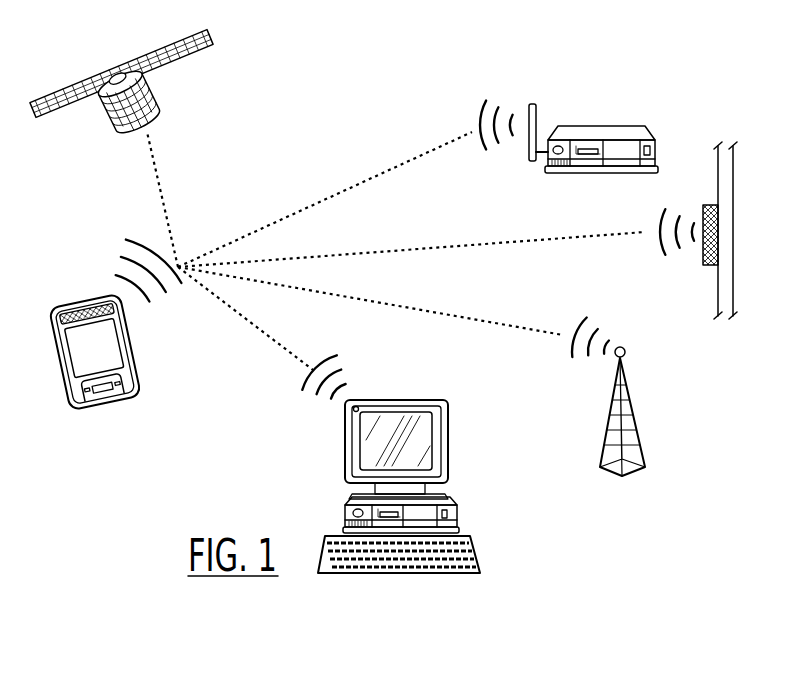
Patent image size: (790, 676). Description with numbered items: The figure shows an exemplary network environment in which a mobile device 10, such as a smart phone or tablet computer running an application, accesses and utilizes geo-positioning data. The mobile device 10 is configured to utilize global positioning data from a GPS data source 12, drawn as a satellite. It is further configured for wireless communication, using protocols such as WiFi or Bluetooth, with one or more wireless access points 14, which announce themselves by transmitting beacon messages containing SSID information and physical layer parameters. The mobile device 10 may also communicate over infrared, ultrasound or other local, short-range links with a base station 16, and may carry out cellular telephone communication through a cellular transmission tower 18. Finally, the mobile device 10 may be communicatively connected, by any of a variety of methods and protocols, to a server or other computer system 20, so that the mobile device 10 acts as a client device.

The mobile device 10 is at (132, 353).
The GPS data source 12 is at (118, 72).
The wireless access point 14 is at (600, 132).
The base station 16 is at (704, 210).
The cellular base station tower 18 is at (632, 404).
The computer system 20 is at (455, 511).